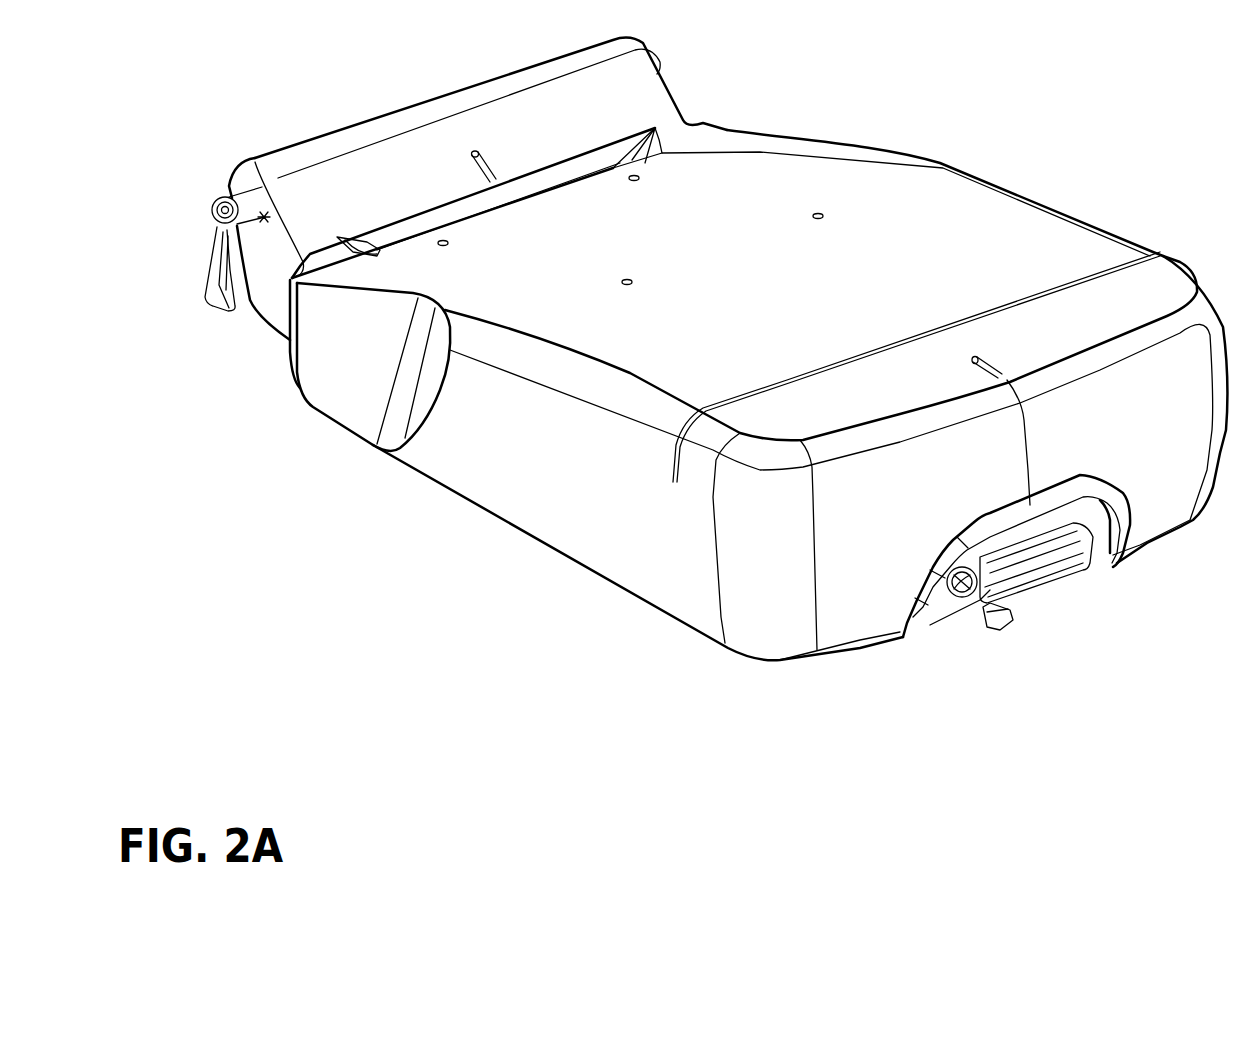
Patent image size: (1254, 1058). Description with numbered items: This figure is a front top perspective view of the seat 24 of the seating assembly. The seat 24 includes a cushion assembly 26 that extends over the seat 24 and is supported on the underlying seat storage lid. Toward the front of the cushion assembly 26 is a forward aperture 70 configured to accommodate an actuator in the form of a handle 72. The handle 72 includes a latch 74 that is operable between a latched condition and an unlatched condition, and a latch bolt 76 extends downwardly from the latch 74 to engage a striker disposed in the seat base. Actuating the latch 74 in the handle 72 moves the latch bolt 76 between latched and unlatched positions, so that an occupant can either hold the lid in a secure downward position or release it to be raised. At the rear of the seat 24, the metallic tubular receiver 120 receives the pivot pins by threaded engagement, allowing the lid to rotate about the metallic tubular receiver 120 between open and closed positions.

The seat 24 is at (674, 382).
The cushion assembly 26 is at (968, 236).
The metallic tubular receiver 120 is at (212, 210).
The forward aperture 70 is at (1058, 601).
The handle 72 is at (1053, 567).
The latch 74 is at (967, 600).
The latch bolt 76 is at (990, 628).